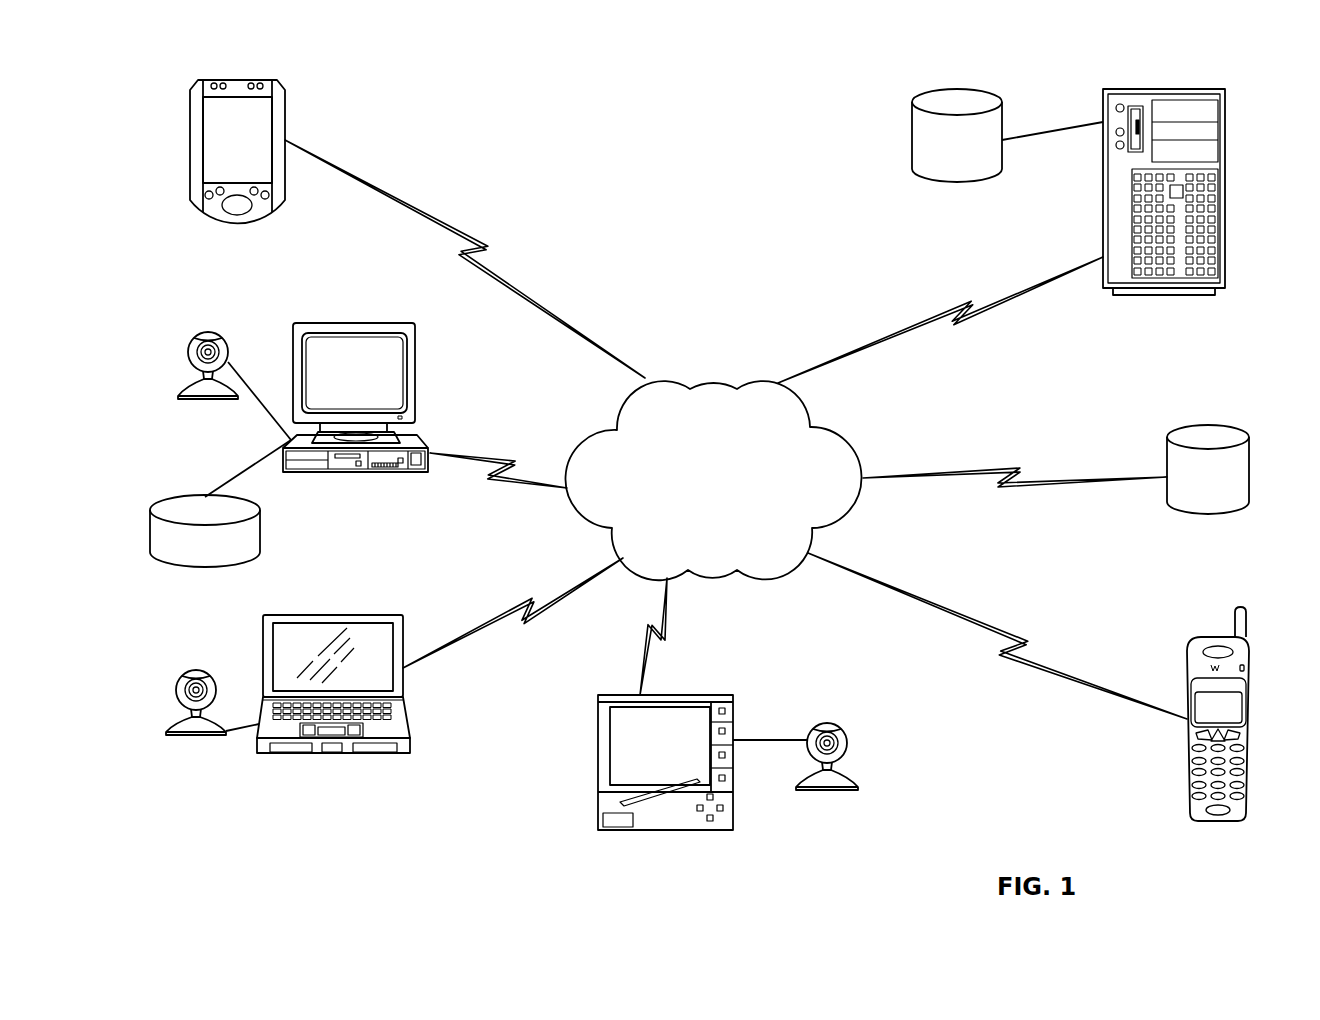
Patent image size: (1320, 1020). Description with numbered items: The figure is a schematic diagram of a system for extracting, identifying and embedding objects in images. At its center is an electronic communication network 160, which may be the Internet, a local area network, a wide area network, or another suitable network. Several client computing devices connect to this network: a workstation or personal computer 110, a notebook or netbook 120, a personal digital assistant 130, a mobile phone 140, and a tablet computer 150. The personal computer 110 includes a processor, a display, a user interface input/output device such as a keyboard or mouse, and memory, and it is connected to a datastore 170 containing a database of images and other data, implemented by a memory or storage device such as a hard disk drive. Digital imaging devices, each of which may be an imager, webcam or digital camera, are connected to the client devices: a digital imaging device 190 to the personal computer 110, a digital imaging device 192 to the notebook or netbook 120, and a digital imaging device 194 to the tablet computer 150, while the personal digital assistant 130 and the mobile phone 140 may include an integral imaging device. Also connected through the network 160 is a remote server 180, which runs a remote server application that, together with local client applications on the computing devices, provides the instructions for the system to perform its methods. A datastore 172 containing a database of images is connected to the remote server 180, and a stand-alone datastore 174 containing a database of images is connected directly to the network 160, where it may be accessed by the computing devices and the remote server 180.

The personal computer 110 is at (357, 473).
The notebook or netbook 120 is at (335, 755).
The personal digital assistant 130 is at (238, 224).
The mobile phone 140 is at (1222, 822).
The tablet computer 150 is at (663, 833).
The electronic communication network 160 is at (713, 383).
The datastore 170 is at (190, 497).
The datastore 172 is at (957, 88).
The stand-alone datastore 174 is at (1209, 425).
The remote server 180 is at (1163, 88).
The digital imaging device 190 is at (212, 331).
The digital imaging device 192 is at (200, 669).
The digital imaging device 194 is at (827, 721).